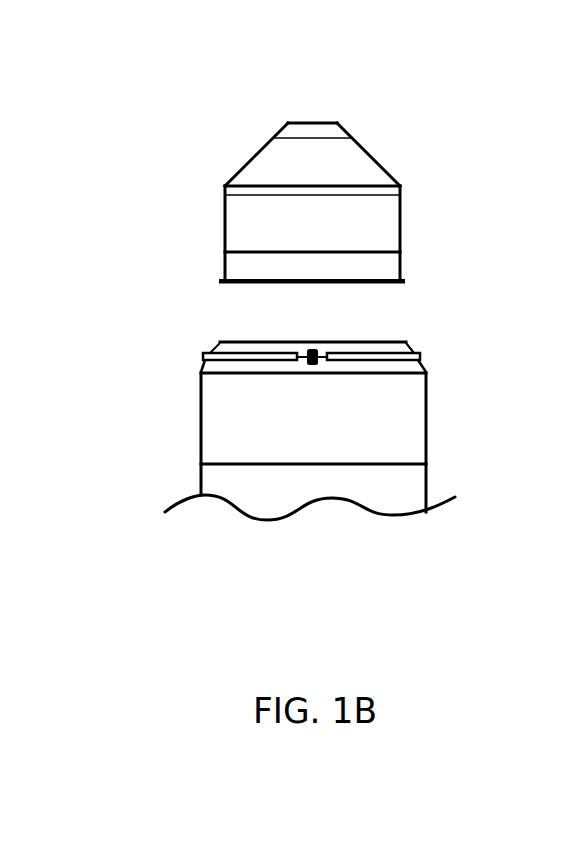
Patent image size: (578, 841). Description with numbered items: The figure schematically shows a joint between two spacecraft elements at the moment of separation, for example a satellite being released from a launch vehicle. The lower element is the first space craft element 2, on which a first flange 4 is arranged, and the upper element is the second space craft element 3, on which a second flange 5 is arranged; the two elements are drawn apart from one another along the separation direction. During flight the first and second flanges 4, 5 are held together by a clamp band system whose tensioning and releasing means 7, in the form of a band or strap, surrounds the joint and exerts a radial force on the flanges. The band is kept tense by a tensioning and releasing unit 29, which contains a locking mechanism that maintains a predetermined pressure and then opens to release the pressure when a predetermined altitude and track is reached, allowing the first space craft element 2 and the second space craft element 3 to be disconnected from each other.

The first space craft element 2 is at (410, 408).
The second space craft element 3 is at (353, 178).
The first flange 4 is at (382, 340).
The second flange 5 is at (368, 277).
The tensioning and releasing means 7 is at (418, 350).
The tensioning and releasing unit 29 is at (307, 357).